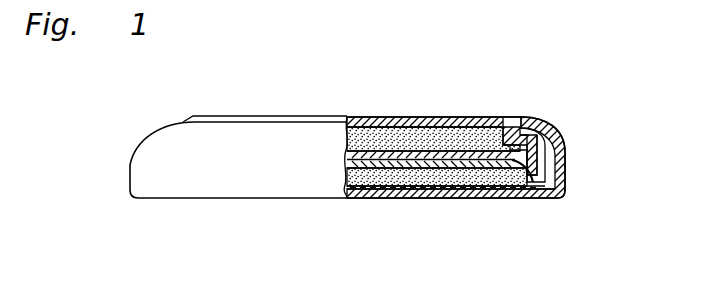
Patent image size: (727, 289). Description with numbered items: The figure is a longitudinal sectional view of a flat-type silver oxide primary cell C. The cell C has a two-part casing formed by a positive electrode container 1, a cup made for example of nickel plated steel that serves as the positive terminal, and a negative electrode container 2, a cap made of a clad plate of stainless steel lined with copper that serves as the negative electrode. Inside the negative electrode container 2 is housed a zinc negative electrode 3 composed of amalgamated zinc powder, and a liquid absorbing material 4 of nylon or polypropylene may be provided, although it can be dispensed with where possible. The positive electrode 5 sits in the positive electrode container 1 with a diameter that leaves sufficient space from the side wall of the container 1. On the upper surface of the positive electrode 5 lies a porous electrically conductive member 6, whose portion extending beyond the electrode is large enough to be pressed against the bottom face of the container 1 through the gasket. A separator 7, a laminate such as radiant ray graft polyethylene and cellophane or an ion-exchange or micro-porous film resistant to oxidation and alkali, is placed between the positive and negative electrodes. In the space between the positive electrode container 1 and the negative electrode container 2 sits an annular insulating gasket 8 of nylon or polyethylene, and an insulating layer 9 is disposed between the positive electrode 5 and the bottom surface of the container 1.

The silver oxide primary cell C is at (578, 85).
The positive electrode container 1 is at (553, 130).
The negative electrode container 2 is at (407, 122).
The zinc negative electrode 3 is at (447, 120).
The liquid absorbing material 4 is at (482, 120).
The positive electrode 5 is at (370, 190).
The porous electrically conductive member 6 is at (400, 190).
The separator 7 is at (366, 125).
The annular insulating gasket 8 is at (517, 118).
The insulating layer 9 is at (450, 190).